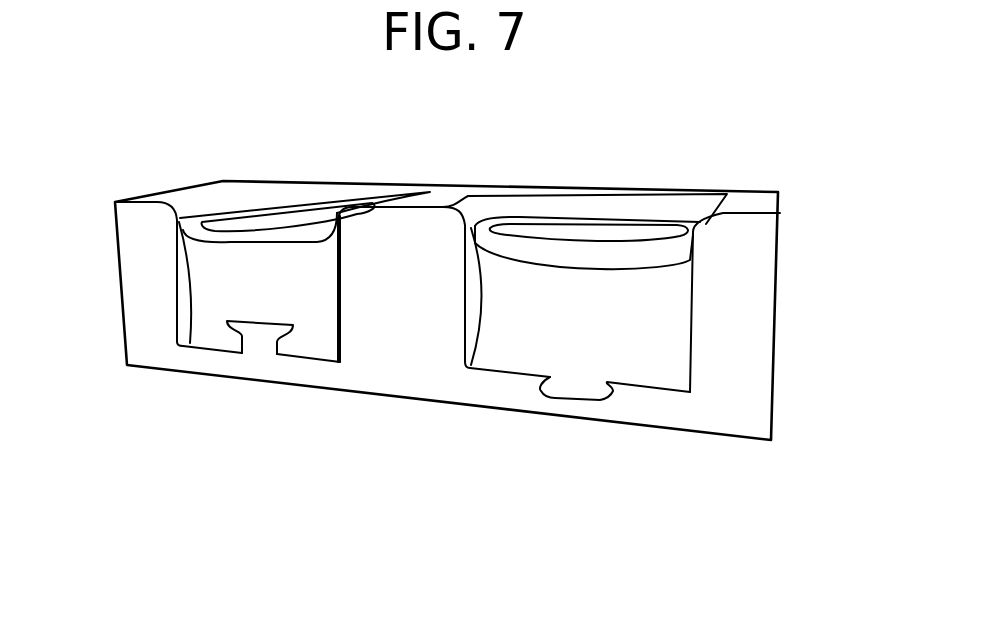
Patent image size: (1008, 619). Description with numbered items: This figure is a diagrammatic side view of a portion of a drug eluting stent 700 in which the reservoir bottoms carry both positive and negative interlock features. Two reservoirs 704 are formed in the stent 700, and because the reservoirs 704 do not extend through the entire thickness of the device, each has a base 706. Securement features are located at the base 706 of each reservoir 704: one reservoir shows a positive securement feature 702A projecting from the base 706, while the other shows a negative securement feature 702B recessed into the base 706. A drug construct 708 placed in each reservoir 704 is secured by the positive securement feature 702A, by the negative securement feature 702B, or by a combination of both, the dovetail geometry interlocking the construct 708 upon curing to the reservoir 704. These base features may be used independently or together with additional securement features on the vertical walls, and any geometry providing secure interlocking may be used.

The stent 700 is at (184, 191).
The positive securement feature 702A is at (258, 333).
The negative securement feature 702B is at (586, 390).
The reservoir 704 is at (216, 208).
The base of reservoir 706 is at (201, 352).
The drug construct 708 is at (310, 313).